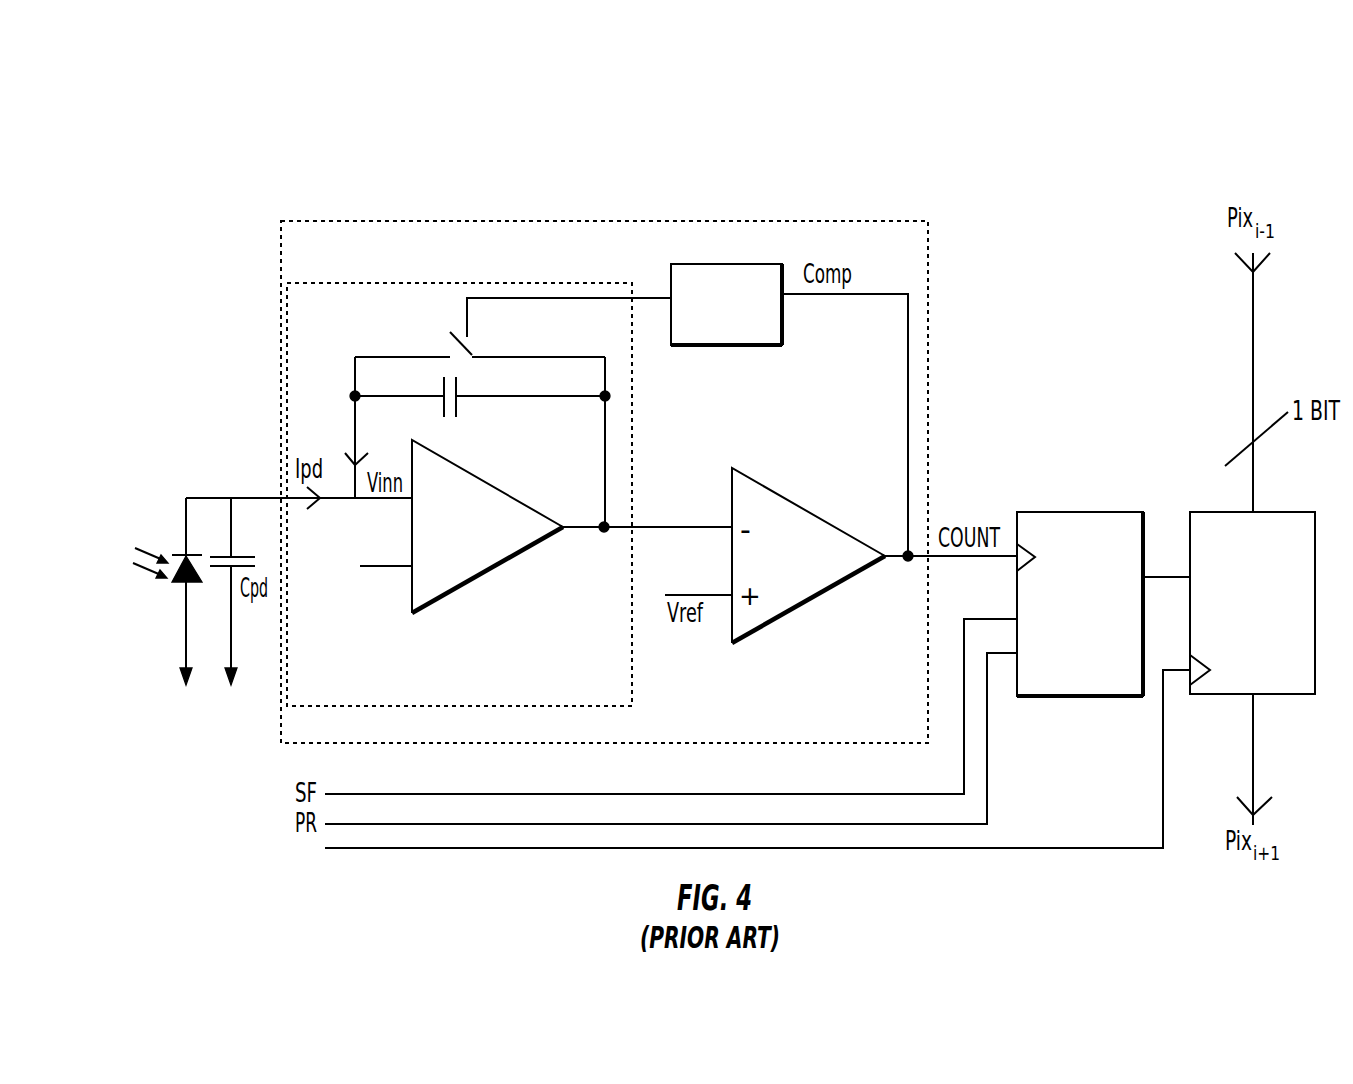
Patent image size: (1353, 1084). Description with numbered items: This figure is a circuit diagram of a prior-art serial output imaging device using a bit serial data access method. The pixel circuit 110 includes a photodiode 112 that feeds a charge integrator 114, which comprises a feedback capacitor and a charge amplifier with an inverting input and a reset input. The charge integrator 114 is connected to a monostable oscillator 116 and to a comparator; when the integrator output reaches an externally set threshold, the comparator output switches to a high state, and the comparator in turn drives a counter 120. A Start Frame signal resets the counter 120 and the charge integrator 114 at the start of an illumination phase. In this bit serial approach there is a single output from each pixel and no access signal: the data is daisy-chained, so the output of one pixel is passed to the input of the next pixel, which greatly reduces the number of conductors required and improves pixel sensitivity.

The pixel circuit 110 is at (950, 147).
The photodiode 112 is at (138, 591).
The integrator 114 is at (509, 474).
The oscillator 116 is at (726, 288).
The counter 120 is at (1080, 584).